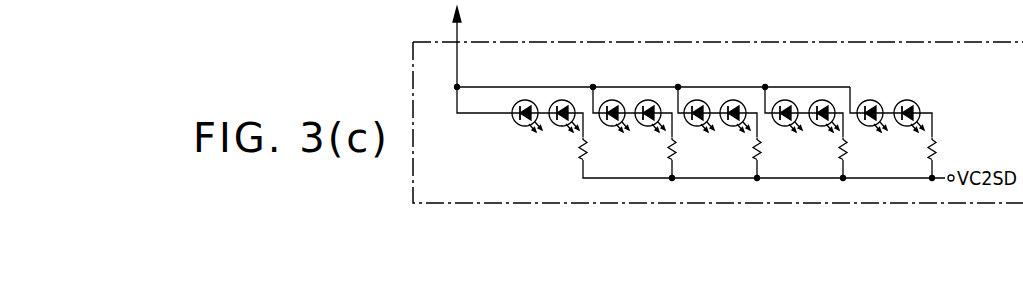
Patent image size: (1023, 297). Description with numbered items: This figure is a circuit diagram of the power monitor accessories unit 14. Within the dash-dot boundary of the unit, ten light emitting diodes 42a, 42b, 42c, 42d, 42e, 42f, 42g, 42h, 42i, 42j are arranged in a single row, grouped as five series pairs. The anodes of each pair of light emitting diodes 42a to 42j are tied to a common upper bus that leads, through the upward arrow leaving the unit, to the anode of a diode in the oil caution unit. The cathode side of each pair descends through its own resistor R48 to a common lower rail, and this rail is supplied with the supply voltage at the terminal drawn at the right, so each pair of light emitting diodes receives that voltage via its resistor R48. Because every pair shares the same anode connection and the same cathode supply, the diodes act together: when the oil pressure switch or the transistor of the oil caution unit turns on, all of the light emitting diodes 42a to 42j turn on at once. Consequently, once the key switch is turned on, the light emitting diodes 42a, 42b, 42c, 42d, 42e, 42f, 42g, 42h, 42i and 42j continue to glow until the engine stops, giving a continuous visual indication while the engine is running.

The power monitor accessories unit 14 is at (584, 40).
The light emitting diode 42a is at (519, 127).
The light emitting diode 42b is at (560, 127).
The light emitting diode 42c is at (606, 101).
The light emitting diode 42d is at (650, 100).
The light emitting diode 42e is at (697, 127).
The light emitting diode 42f is at (737, 100).
The light emitting diode 42g is at (793, 136).
The light emitting diode 42h is at (825, 100).
The light emitting diode 42i is at (871, 100).
The light emitting diode 42j is at (912, 100).
The resistor R48 is at (778, 147).